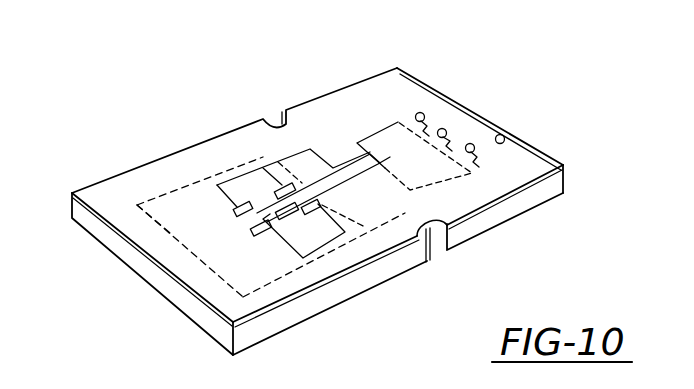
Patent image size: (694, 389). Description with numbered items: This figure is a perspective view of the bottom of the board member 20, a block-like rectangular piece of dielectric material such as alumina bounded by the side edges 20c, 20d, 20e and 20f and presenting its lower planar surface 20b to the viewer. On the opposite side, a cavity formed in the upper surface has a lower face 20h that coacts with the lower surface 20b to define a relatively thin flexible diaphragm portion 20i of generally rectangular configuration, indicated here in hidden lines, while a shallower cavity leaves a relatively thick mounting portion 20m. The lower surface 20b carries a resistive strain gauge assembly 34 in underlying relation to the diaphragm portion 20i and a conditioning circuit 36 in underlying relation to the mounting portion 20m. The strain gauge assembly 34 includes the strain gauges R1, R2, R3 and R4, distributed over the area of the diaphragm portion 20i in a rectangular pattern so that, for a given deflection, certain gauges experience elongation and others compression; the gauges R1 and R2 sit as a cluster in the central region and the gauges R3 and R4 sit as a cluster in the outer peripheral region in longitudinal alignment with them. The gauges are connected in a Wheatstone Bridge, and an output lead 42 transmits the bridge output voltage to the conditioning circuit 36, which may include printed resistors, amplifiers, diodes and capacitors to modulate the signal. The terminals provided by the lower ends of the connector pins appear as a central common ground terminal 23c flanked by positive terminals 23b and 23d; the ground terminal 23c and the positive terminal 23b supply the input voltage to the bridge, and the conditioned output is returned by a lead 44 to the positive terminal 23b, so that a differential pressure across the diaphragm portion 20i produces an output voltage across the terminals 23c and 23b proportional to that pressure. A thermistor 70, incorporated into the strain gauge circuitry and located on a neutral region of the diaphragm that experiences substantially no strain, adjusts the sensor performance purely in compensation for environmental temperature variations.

The board member 20 is at (542, 226).
The lower surface 20b is at (190, 176).
The side edge 20c is at (470, 234).
The side edge 20d is at (222, 326).
The side edge 20e is at (143, 163).
The side edge 20f is at (562, 165).
The lower face of the cavity 20h is at (138, 216).
The diaphragm portion 20i is at (177, 265).
The mounting portion 20m is at (386, 124).
The positive terminal 23b is at (423, 113).
The common ground terminal 23c is at (472, 144).
The positive terminal 23d is at (510, 134).
The resistive strain gauge assembly 34 is at (237, 161).
The conditioning circuit 36 is at (372, 132).
The output lead 42 is at (317, 153).
The lead 44 is at (444, 128).
The thermistor 70 is at (100, 190).
The strain gauge R1 is at (195, 210).
The strain gauge R2 is at (248, 255).
The strain gauge R3 is at (304, 231).
The strain gauge R4 is at (263, 178).